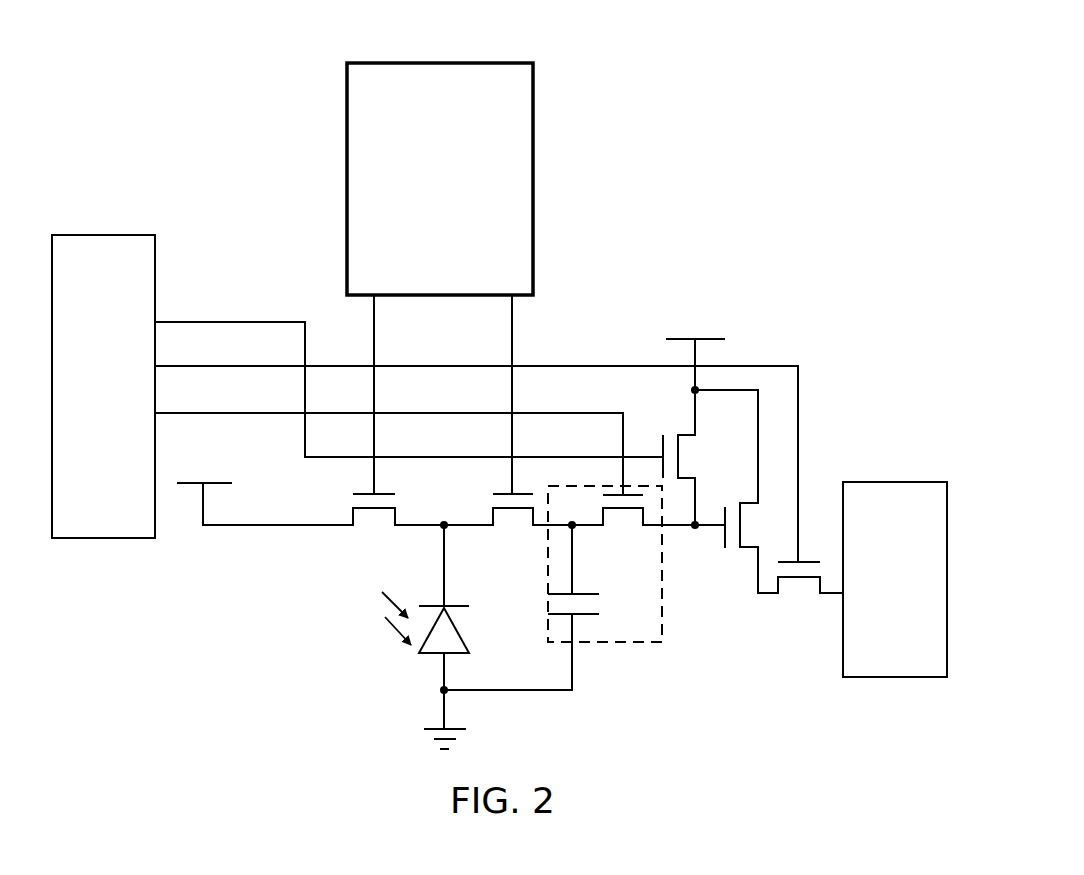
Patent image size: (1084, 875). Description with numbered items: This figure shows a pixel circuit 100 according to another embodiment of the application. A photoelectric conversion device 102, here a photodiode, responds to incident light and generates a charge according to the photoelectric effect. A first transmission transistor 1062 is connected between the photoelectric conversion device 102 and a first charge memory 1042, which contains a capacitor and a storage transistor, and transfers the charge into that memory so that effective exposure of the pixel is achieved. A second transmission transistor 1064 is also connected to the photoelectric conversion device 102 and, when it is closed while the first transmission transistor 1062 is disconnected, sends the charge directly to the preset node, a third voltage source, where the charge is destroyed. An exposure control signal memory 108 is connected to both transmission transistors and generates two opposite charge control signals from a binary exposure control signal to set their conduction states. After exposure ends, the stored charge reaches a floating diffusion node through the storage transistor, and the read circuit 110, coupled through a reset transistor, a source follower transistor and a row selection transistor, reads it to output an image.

The pixel circuit 100 is at (620, 150).
The exposure control signal memory 108 is at (488, 60).
The read circuit 110 is at (97, 538).
The second transmission transistor 1064 is at (385, 511).
The first transmission transistor 1062 is at (527, 511).
The photoelectric conversion device 102 is at (455, 634).
The first charge memory 1042 is at (637, 642).